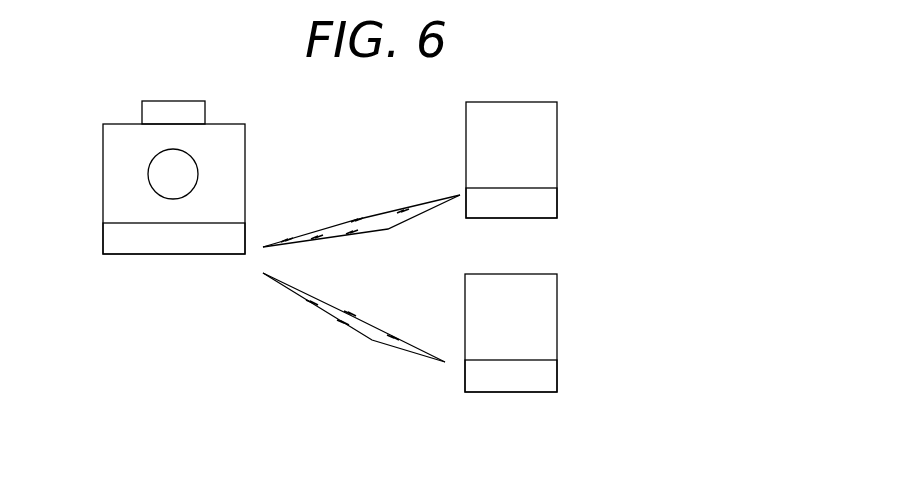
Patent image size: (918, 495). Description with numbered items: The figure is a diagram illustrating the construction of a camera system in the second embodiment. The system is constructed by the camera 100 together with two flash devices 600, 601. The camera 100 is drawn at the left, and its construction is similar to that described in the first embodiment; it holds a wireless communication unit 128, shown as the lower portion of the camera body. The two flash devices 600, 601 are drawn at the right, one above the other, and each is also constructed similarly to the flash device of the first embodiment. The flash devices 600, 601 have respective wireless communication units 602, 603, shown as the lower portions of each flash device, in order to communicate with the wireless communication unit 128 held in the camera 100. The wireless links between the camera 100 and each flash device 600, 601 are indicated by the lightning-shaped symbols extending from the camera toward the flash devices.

The camera 100 is at (245, 167).
The wireless communication unit 128 is at (184, 255).
The flash device 600 is at (557, 142).
The flash device 601 is at (557, 318).
The wireless communication unit 602 is at (557, 198).
The wireless communication unit 603 is at (557, 374).